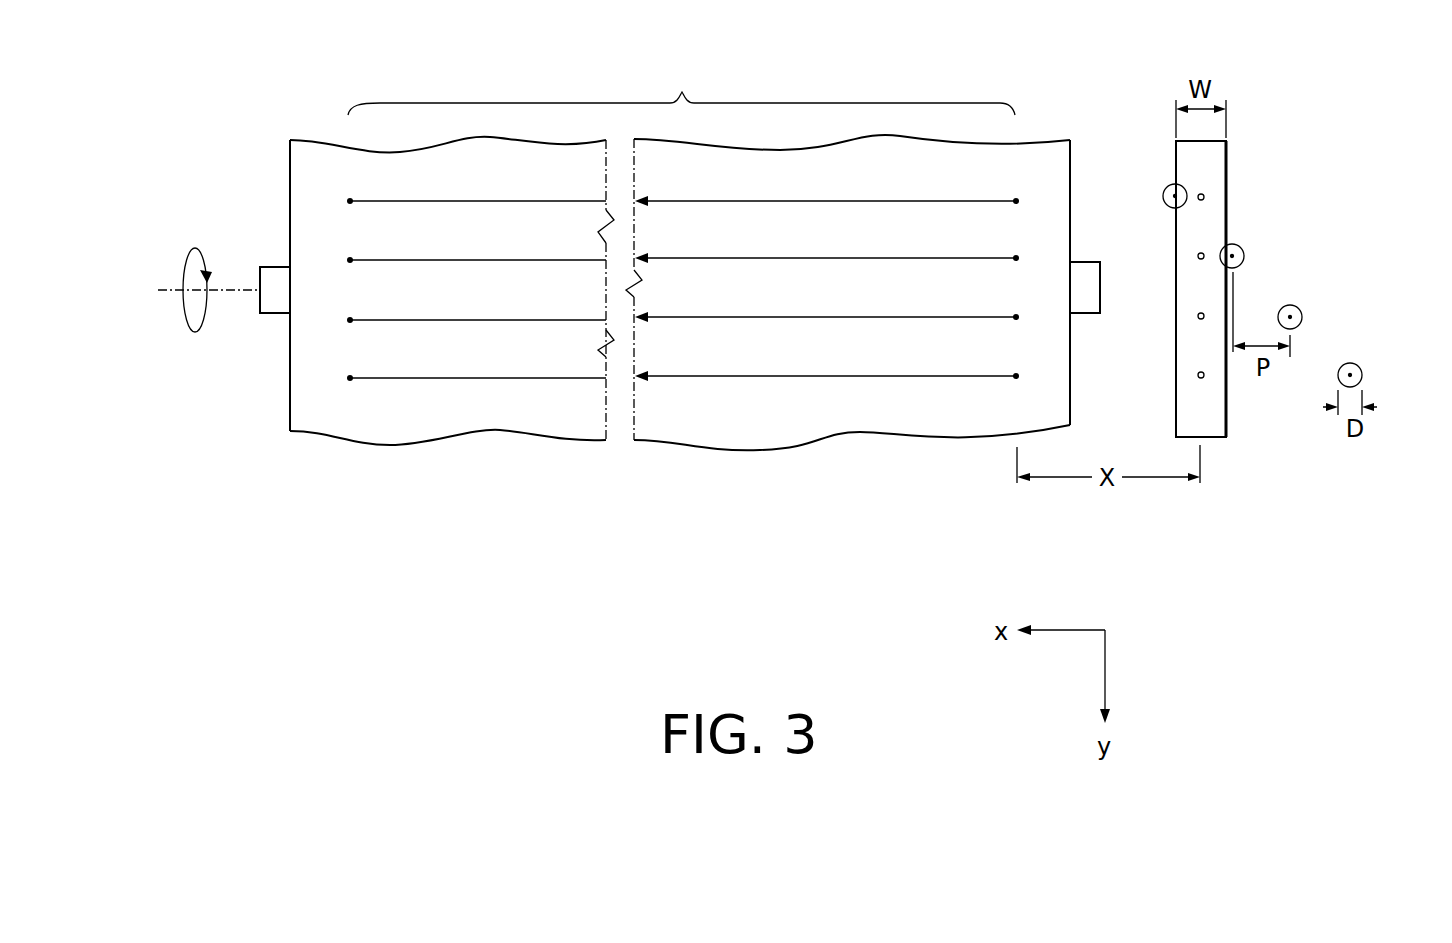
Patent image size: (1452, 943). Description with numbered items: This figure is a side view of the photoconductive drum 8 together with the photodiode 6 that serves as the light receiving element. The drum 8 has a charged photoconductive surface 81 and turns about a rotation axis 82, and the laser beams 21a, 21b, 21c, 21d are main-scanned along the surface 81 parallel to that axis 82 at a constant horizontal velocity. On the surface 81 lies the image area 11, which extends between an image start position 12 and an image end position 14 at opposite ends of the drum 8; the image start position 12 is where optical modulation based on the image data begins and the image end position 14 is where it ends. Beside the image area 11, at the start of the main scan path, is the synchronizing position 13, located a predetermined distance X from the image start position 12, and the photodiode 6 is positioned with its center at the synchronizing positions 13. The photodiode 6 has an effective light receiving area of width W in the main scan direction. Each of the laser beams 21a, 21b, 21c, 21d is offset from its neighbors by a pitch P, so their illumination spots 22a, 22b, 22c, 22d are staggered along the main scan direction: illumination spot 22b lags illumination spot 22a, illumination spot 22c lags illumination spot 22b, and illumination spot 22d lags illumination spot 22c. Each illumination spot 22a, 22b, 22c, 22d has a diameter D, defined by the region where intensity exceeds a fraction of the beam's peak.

The photodiode 6 is at (1220, 446).
The photoconductive drum 8 is at (838, 455).
The photoconductive surface 81 is at (718, 413).
The rotation axis 82 is at (230, 290).
The image area 11 is at (681, 84).
The image start position 12 is at (1016, 258).
The synchronizing position 13 is at (1202, 254).
The image end position 14 is at (350, 260).
The laser beam 21a is at (1175, 196).
The laser beam 21b is at (1232, 256).
The laser beam 21c is at (1290, 317).
The laser beam 21d is at (1350, 375).
The illumination spot 22a is at (1163, 196).
The illumination spot 22b is at (1244, 256).
The illumination spot 22c is at (1302, 317).
The illumination spot 22d is at (1362, 375).